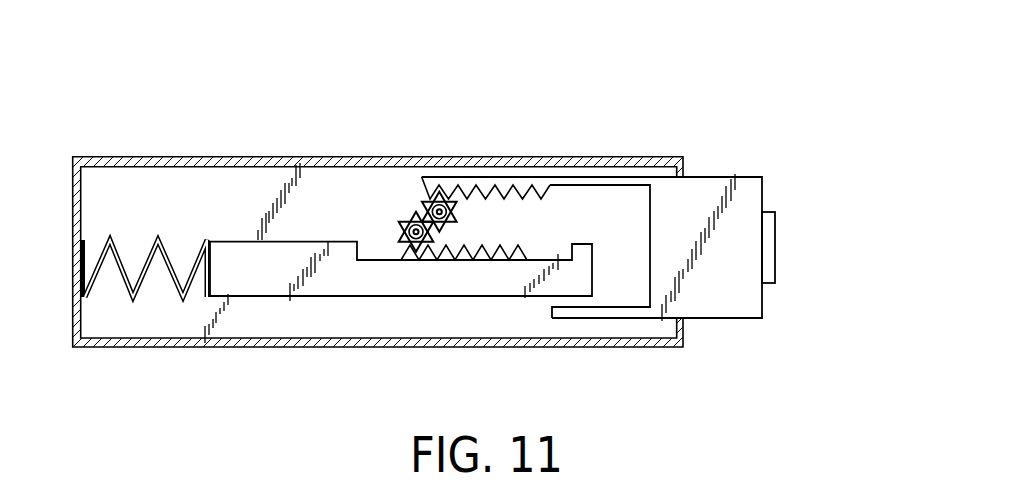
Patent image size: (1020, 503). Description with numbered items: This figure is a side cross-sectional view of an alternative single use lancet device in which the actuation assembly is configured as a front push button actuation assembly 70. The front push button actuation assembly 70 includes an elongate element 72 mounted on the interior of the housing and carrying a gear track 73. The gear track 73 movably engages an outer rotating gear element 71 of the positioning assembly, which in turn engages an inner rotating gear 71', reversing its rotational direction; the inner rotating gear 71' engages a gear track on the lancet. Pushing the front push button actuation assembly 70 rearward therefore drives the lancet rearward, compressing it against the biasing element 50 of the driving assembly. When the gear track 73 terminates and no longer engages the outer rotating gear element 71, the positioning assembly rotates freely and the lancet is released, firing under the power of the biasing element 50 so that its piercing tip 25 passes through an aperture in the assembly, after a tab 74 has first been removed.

The front push button actuation assembly 70 is at (601, 176).
The elongate element 72 is at (522, 177).
The gear track 73 is at (492, 205).
The outer rotating gear element 71 is at (412, 164).
The inner rotating gear 71' is at (373, 179).
The piercing tip 25 is at (632, 265).
The biasing element 50 is at (135, 297).
The tab 74 is at (776, 273).